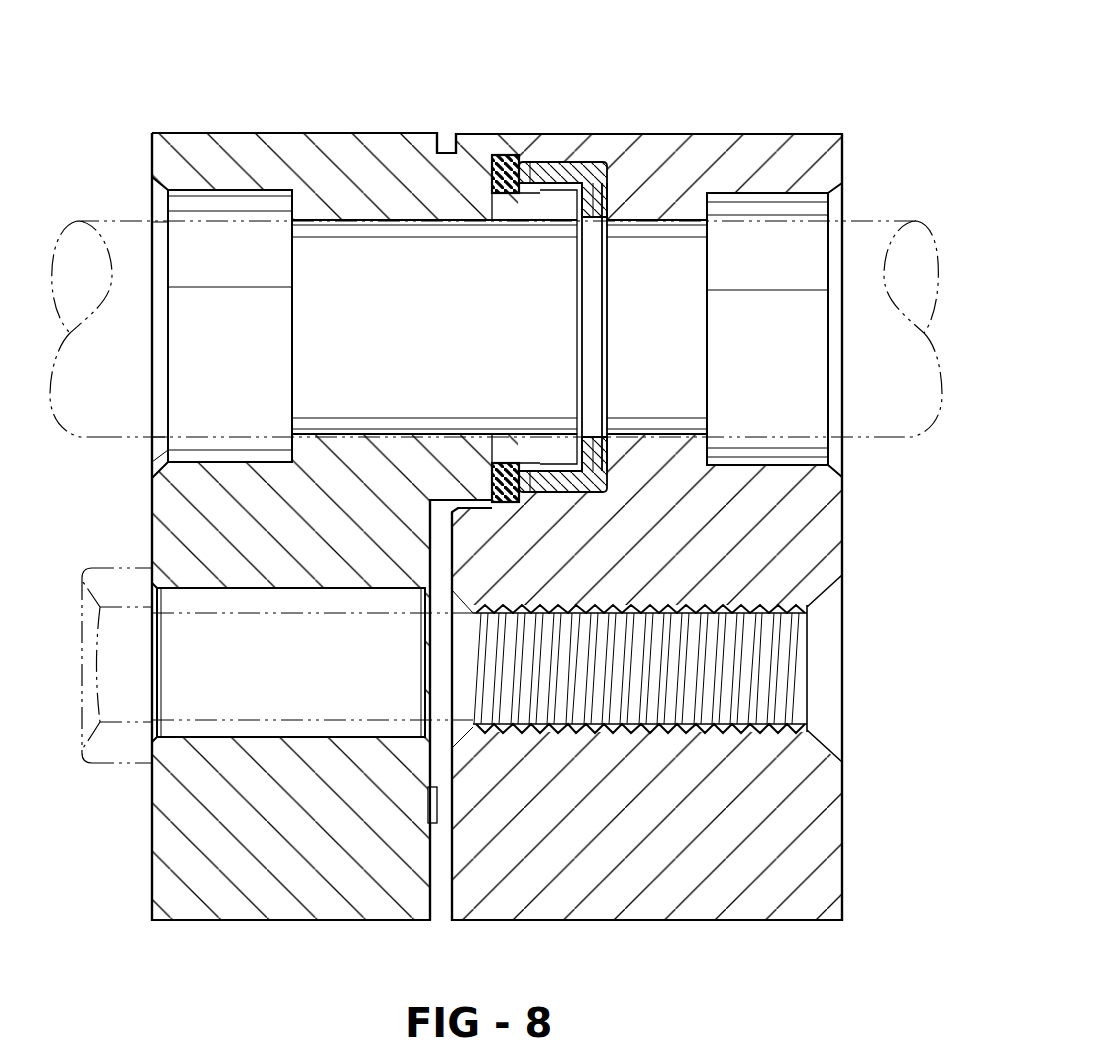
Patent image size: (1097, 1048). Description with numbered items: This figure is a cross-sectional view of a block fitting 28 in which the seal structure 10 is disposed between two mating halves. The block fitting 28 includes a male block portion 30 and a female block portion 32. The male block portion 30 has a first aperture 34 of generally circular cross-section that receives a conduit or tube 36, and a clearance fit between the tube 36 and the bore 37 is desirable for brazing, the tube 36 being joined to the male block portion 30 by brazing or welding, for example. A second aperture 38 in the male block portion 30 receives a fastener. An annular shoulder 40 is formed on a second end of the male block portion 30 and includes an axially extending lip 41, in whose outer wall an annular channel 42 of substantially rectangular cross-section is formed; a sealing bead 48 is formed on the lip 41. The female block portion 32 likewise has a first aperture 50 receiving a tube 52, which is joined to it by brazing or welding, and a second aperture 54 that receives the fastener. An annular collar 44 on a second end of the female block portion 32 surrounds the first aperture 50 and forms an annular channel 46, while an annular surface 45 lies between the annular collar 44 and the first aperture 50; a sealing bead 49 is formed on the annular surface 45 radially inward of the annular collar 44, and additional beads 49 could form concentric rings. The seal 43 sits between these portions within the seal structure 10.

The seal structure 10 is at (598, 380).
The block fitting 28 is at (775, 85).
The male block portion 30 is at (170, 140).
The female block portion 32 is at (828, 134).
The first aperture 34 is at (265, 200).
The tube 36 is at (145, 438).
The bore 37 is at (222, 200).
The second aperture 38 is at (205, 673).
The annular shoulder 40 is at (492, 200).
The lip 41 is at (510, 205).
The annular channel 42 is at (488, 193).
The seal 43 is at (497, 155).
The annular collar 44 is at (516, 162).
The annular surface 45 is at (600, 162).
The annular channel 46 is at (535, 165).
The sealing bead 48 is at (570, 215).
The sealing bead 49 is at (607, 210).
The first aperture 50 is at (805, 198).
The tube 52 is at (885, 442).
The second aperture 54 is at (775, 673).